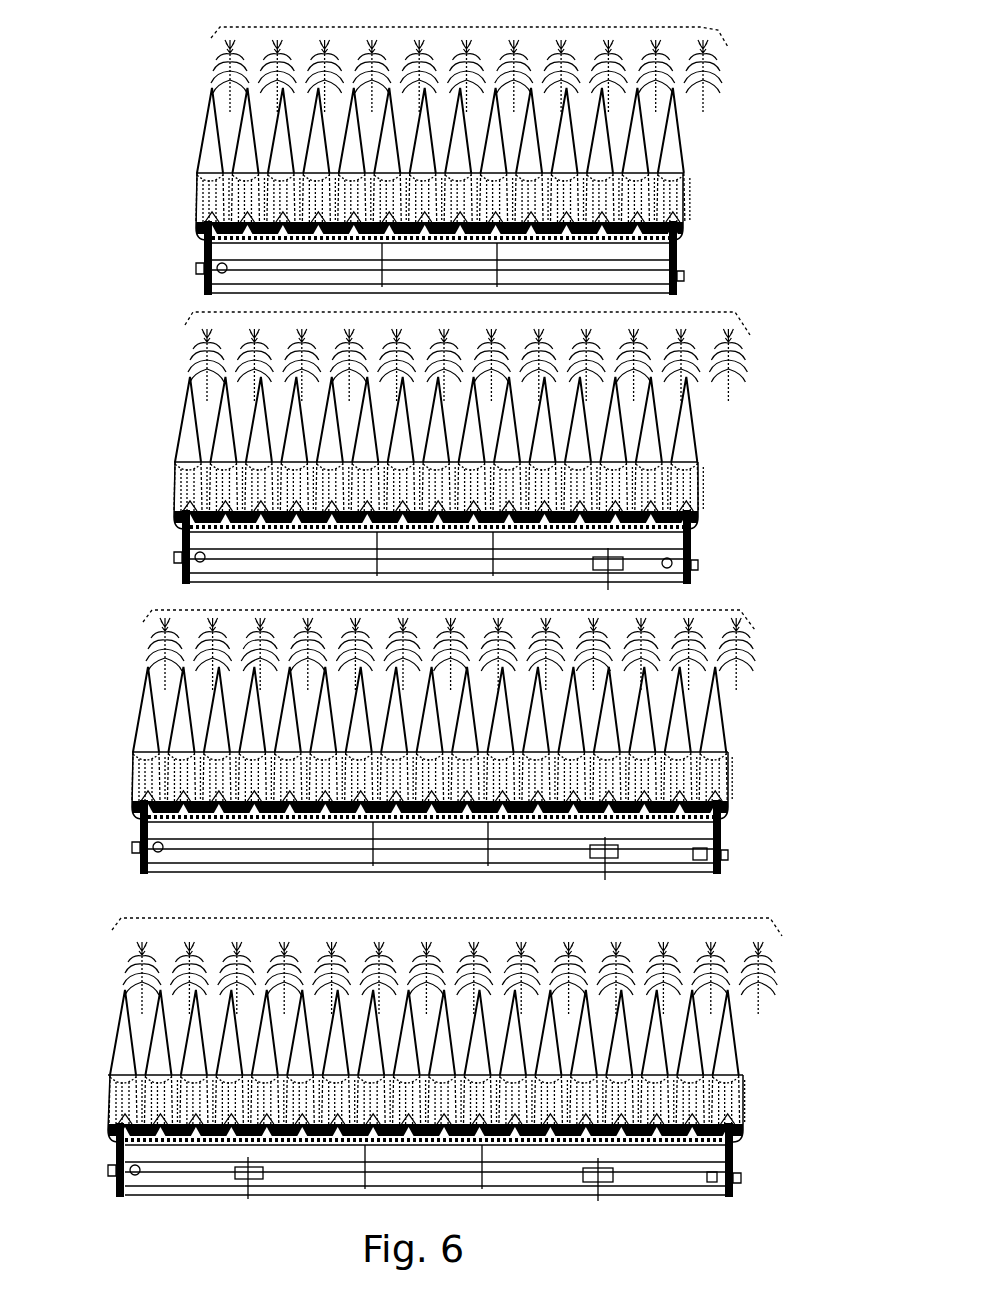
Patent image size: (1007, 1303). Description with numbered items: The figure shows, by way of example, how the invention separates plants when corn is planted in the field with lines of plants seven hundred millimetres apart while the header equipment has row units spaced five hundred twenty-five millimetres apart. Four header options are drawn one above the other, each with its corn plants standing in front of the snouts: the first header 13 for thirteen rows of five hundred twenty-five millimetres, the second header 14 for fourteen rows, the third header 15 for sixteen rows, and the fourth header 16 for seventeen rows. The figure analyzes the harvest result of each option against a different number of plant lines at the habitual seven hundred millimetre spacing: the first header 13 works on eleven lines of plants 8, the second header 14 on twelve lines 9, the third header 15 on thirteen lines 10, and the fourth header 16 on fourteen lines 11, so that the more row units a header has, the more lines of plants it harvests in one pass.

The eleven lines of plants 8 is at (705, 28).
The twelve lines of plants 9 is at (738, 312).
The thirteen lines of plants 10 is at (725, 610).
The fourteen lines of plants 11 is at (740, 918).
The header for thirteen rows of 525 mm 13 is at (183, 153).
The header for fourteen rows of 525 mm 14 is at (162, 444).
The header for sixteen rows of 525 mm 15 is at (120, 735).
The header for seventeen rows of 525 mm 16 is at (98, 1058).